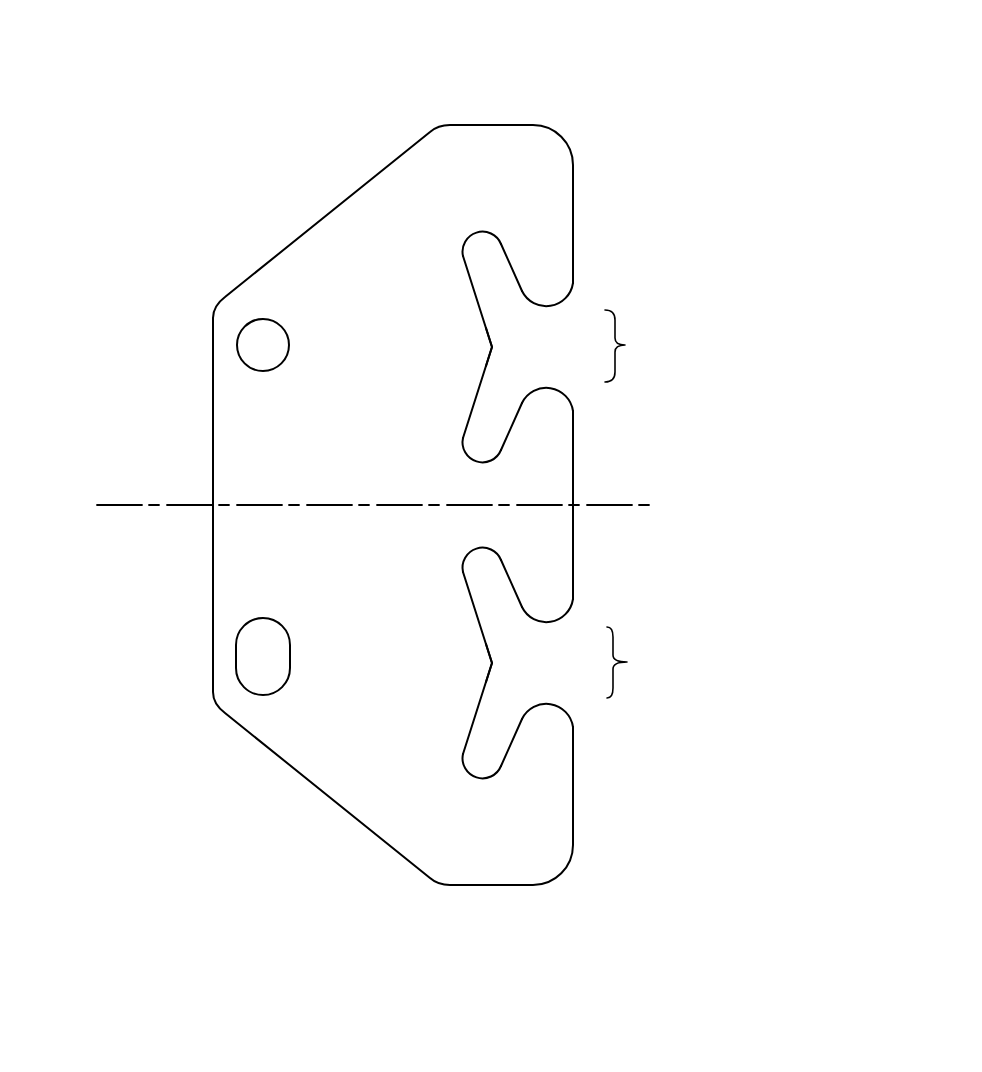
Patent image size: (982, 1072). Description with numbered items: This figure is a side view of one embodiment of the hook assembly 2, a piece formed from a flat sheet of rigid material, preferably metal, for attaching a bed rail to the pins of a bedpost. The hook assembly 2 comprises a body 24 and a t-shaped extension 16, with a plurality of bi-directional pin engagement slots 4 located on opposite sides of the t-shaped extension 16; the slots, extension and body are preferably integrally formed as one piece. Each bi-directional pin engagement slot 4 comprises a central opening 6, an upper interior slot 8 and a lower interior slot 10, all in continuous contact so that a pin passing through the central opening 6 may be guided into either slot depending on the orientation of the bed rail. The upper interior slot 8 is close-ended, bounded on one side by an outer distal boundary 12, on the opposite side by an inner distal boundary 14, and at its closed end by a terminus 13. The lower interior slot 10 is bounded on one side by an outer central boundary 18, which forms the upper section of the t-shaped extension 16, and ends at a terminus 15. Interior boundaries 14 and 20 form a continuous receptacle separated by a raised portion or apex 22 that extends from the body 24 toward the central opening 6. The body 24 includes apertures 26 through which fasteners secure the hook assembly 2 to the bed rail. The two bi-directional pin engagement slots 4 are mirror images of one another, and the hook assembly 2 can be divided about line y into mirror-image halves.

The hook assembly 2 is at (573, 88).
The bi-directional pin engagement slot 4 is at (625, 504).
The central opening 6 is at (544, 359).
The upper interior slot 8 is at (478, 282).
The lower interior slot 10 is at (475, 442).
The outer distal boundary 12 is at (506, 252).
The terminus 13 is at (483, 229).
The inner distal boundary 14 is at (470, 288).
The terminus 15 is at (472, 462).
The t-shaped extension 16 is at (552, 490).
The outer central boundary 18 is at (517, 418).
The interior boundary 20 is at (476, 398).
The apex 22 is at (492, 347).
The body 24 is at (316, 469).
The aperture 26 is at (262, 347).
The line y is at (108, 505).